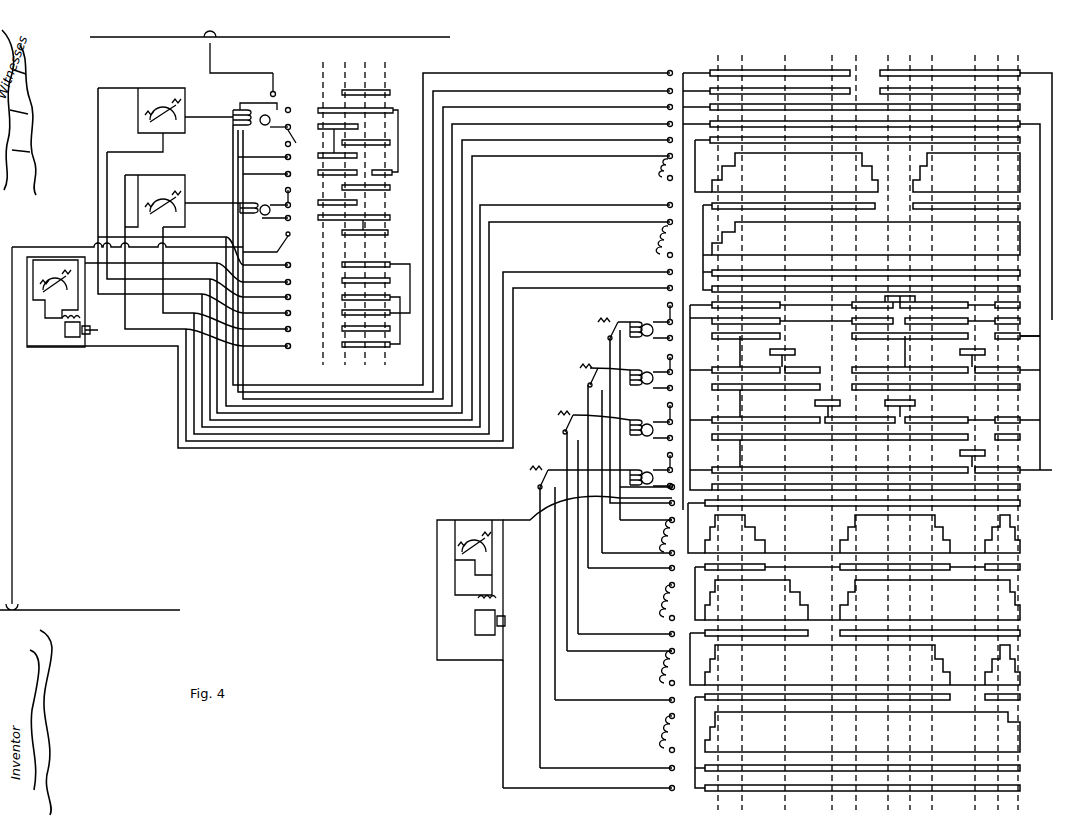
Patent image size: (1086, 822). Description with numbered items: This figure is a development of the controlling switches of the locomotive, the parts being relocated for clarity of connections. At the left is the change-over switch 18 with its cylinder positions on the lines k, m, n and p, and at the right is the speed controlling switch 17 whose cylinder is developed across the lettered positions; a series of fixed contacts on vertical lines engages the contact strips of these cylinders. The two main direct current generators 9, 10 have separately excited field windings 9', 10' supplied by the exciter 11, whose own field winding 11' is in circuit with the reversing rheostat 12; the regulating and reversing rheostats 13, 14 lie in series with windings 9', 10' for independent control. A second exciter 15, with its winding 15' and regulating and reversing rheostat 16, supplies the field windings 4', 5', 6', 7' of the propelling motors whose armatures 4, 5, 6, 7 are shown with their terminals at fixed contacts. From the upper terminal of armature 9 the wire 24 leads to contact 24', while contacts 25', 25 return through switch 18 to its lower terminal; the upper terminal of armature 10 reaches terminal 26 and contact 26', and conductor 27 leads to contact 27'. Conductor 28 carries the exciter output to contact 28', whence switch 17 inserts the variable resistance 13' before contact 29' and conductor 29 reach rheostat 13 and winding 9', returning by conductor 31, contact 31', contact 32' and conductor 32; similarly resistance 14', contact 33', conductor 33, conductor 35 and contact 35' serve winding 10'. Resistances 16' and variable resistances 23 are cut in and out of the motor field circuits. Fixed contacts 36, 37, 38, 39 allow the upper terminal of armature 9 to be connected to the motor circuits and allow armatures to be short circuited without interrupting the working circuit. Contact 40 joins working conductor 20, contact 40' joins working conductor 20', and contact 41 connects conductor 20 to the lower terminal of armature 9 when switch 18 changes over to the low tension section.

The working conductor 20 is at (270, 52).
The working conductor 20' is at (90, 429).
The contact 40 is at (284, 85).
The contact 40' is at (272, 242).
The contact 41 is at (300, 141).
The regulating and reversing rheostat 13 is at (165, 120).
The regulating and reversing rheostat 14 is at (182, 201).
The reversing rheostat 12 is at (48, 302).
The regulating and reversing rheostat 16 is at (470, 590).
The field winding 9' is at (255, 124).
The main direct current generator 9 is at (275, 127).
The field winding 10' is at (250, 199).
The main direct current generator 10 is at (275, 208).
The field winding 11' is at (60, 324).
The exciter 11 is at (81, 329).
The winding 15' is at (478, 585).
The exciter 15 is at (490, 622).
The wire 24 is at (439, 229).
The contact 25 is at (432, 241).
The terminal 26 is at (432, 253).
The conductor 27 is at (384, 265).
The conductor 28 is at (377, 276).
The conductor 29 is at (388, 286).
The conductor 31 is at (384, 257).
The conductor 32 is at (348, 368).
The conductor 33 is at (415, 328).
The conductor 35 is at (397, 308).
The change-over switch 18 is at (364, 202).
The speed controlling switch 17 is at (879, 422).
The contact 24' is at (659, 67).
The contact 25' is at (656, 85).
The contact 26' is at (656, 101).
The contact 27' is at (656, 118).
The contact 28' is at (656, 134).
The contact 29' is at (656, 150).
The contact 31' is at (656, 198).
The contact 32' is at (656, 282).
The contact 33' is at (656, 215).
The contact 35' is at (656, 265).
The variable resistance 13' is at (652, 170).
The variable resistance 14' is at (652, 242).
The resistances 16' is at (651, 638).
The variable resistances 23 is at (530, 470).
The field winding 4' is at (595, 388).
The field winding 5' is at (632, 369).
The field winding 6' is at (632, 419).
The field winding 7' is at (632, 469).
The motor armature 4 is at (657, 330).
The motor armature 5 is at (657, 380).
The motor armature 6 is at (657, 430).
The motor armature 7 is at (657, 478).
The fixed contact 36 is at (668, 357).
The fixed contact 37 is at (668, 305).
The fixed contact 38 is at (668, 405).
The fixed contact 39 is at (668, 455).